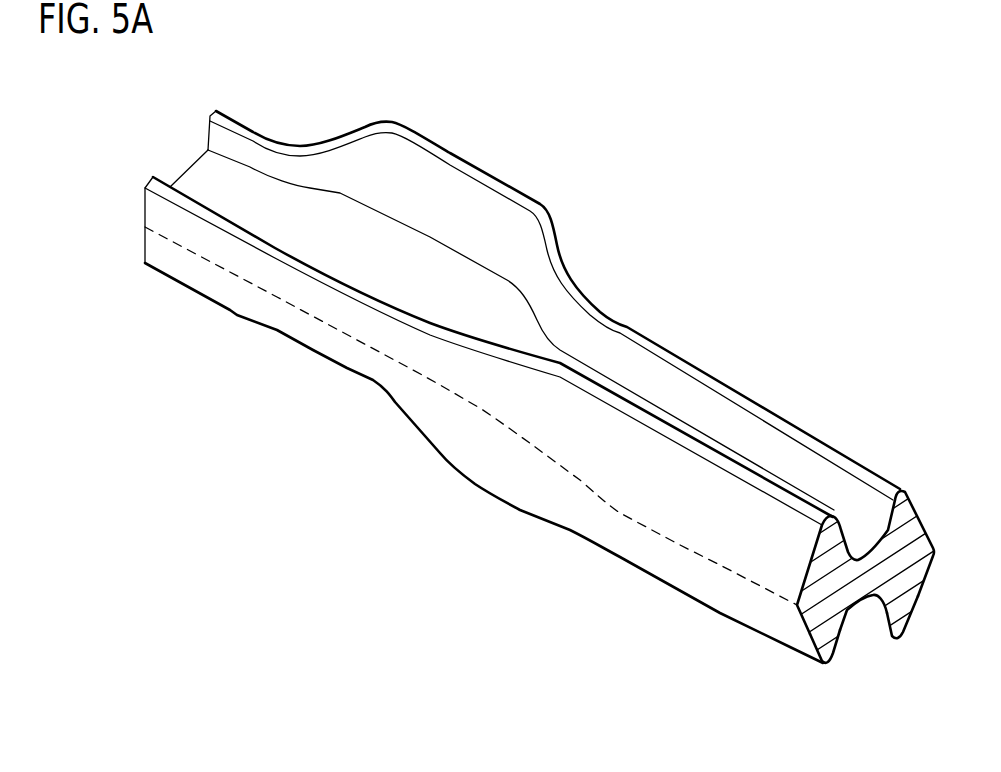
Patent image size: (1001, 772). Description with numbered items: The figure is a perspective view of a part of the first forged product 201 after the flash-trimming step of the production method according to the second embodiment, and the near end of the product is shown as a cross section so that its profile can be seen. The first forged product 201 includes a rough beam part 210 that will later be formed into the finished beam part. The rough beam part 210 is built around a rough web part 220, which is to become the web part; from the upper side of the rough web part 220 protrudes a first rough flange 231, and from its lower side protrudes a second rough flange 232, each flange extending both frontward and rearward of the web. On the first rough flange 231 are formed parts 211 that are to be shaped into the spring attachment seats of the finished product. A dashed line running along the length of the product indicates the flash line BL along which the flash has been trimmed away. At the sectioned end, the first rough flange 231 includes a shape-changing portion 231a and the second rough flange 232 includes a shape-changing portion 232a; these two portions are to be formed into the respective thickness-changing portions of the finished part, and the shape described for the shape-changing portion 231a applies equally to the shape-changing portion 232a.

The first forged product 201 is at (247, 88).
The rough beam part 210 is at (743, 188).
The parts to be formed into the spring attachment seats 211 is at (488, 165).
The rough web part 220 is at (661, 415).
The first rough flange 231 is at (582, 308).
The second rough flange 232 is at (613, 407).
The shape-changing portion 231a is at (900, 628).
The shape-changing portion 232a is at (826, 650).
The flash line BL is at (680, 545).